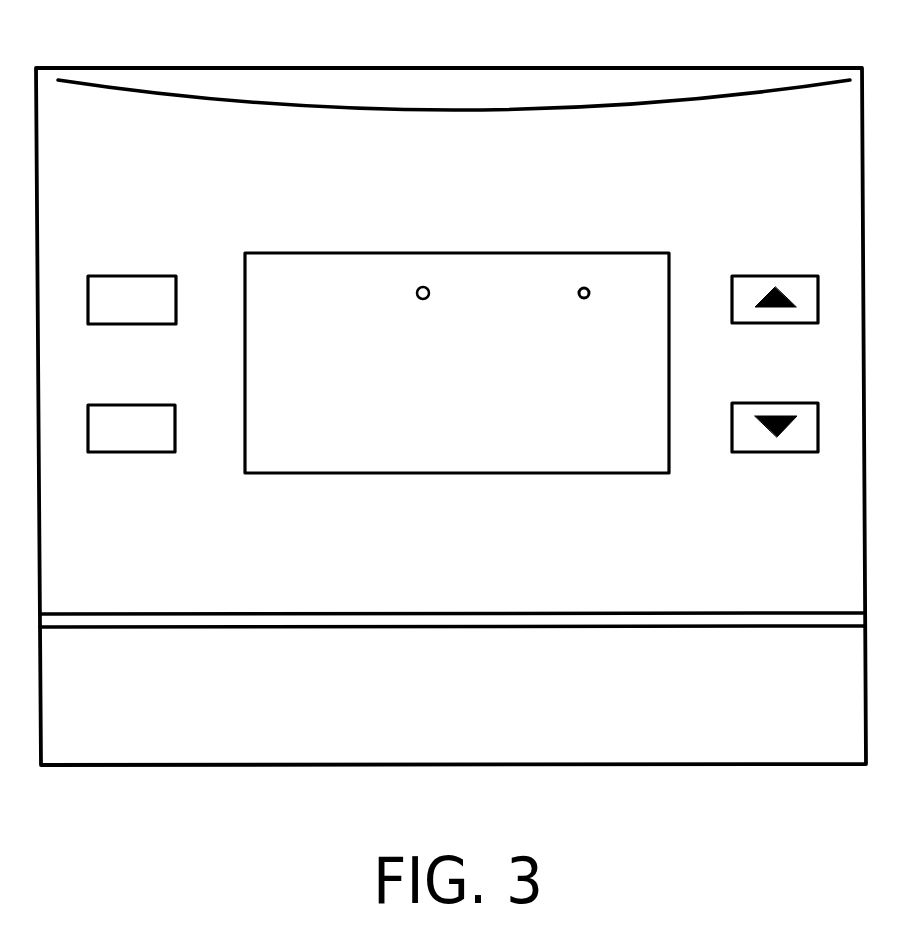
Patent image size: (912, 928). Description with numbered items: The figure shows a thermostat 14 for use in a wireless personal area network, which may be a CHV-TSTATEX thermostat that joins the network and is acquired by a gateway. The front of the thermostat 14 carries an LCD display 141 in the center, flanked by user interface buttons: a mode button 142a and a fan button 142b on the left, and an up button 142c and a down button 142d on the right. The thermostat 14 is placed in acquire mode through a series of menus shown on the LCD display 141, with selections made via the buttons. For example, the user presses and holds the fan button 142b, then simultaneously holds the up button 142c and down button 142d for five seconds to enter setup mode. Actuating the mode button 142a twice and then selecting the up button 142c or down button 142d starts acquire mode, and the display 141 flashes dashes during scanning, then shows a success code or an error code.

The thermostat 14 is at (650, 56).
The LCD display 141 is at (590, 256).
The mode button 142a is at (134, 282).
The fan button 142b is at (130, 410).
The up button 142c is at (745, 283).
The down button 142d is at (757, 412).